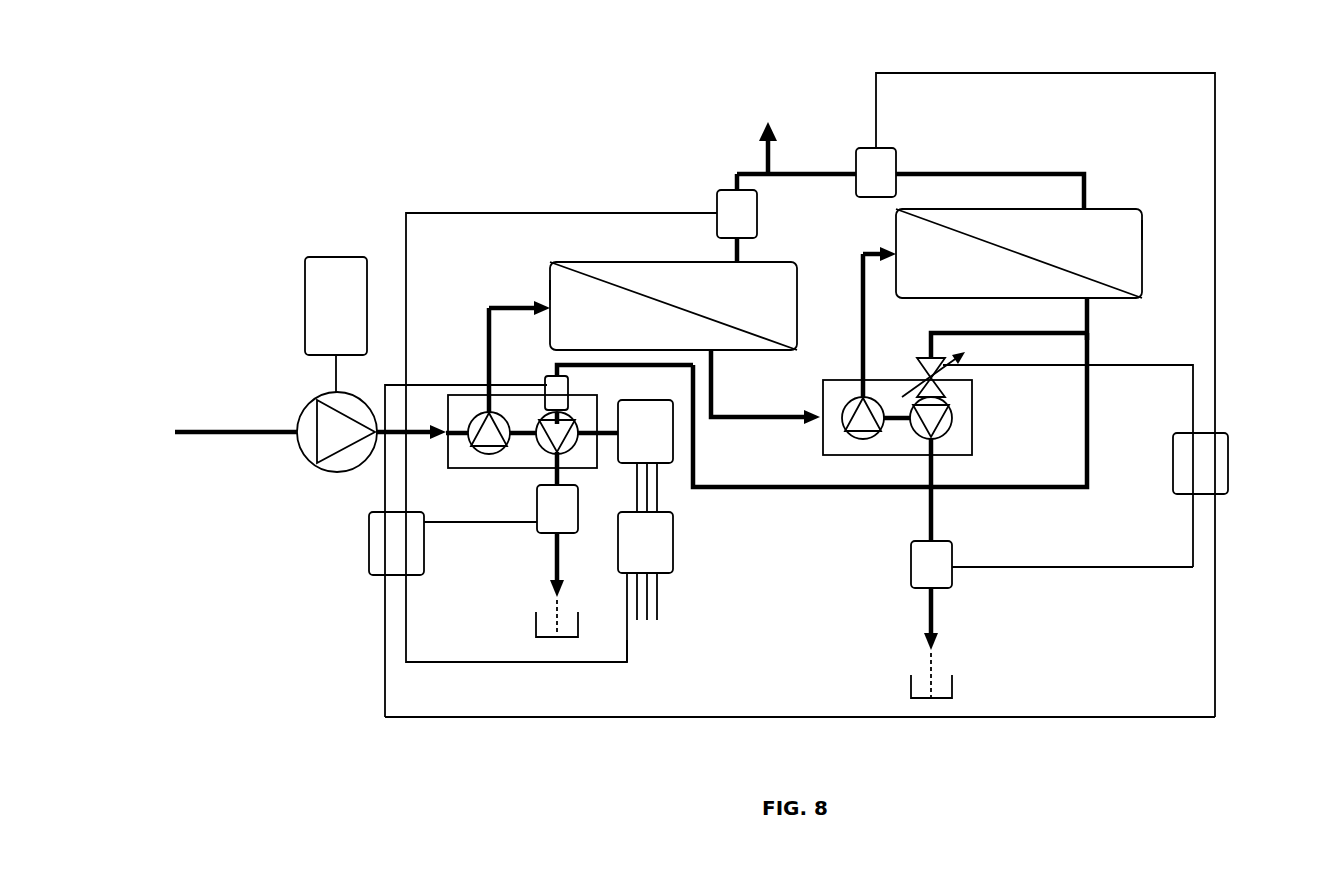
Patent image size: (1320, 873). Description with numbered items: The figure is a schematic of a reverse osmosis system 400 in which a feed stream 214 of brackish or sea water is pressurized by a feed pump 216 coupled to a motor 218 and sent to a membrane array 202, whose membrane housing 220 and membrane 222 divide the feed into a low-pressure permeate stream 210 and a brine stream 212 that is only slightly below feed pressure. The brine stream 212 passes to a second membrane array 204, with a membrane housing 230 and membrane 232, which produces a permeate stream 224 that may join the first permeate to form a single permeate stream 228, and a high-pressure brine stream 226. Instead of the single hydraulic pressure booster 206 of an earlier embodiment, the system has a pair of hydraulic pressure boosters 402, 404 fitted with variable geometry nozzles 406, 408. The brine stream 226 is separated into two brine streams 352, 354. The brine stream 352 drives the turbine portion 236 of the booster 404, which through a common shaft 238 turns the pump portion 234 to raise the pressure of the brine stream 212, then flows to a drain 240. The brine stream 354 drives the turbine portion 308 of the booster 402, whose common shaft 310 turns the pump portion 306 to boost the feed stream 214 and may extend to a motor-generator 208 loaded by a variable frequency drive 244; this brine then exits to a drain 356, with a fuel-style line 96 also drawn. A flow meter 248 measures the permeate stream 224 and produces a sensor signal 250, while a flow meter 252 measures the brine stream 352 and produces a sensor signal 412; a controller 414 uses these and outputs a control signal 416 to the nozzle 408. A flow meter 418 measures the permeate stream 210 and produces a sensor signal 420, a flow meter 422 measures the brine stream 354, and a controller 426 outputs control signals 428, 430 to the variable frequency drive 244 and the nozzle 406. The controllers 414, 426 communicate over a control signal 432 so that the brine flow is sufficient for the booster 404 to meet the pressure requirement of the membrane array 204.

The reverse osmosis system 400 is at (603, 88).
The fuel line 96 is at (612, 445).
The membrane array 202 is at (643, 260).
The membrane array 204 is at (1028, 222).
The hydraulic pressure booster 206 is at (895, 397).
The motor-generator 208 is at (652, 392).
The permeate stream 210 is at (740, 250).
The brine stream 212 is at (718, 424).
The feed stream 214 is at (392, 385).
The feed pump 216 is at (334, 472).
The motor 218 is at (336, 257).
The membrane housing 220 is at (550, 285).
The membrane 222 is at (665, 300).
The permeate stream 224 is at (1056, 174).
The brine stream 226 is at (1090, 330).
The single permeate stream 228 is at (770, 155).
The membrane housing 230 is at (1142, 228).
The membrane 232 is at (1068, 268).
The pump portion 234 is at (848, 408).
The turbine portion 236 is at (953, 420).
The common shaft 238 is at (895, 425).
The drain 240 is at (952, 680).
The variable frequency drive 244 is at (673, 535).
The flow meter 248 is at (862, 148).
The sensor signal 250 is at (982, 73).
The flow meter 252 is at (911, 566).
The pump portion 306 is at (470, 455).
The turbine portion 308 is at (545, 455).
The common shaft 310 is at (545, 392).
The brine stream 352 is at (1057, 333).
The brine stream 354 is at (1089, 455).
The drain 356 is at (536, 622).
The hydraulic pressure booster 402 is at (509, 407).
The hydraulic pressure booster 404 is at (880, 370).
The variable geometry nozzle 406 is at (548, 376).
The variable geometry nozzle 408 is at (945, 365).
The sensor signal 412 is at (1075, 567).
The controller 414 is at (1228, 457).
The control signal 416 is at (1193, 372).
The flow meter 418 is at (717, 195).
The sensor signal 420 is at (440, 213).
The flow meter 422 is at (566, 533).
The controller 426 is at (424, 553).
The control signal 428 is at (627, 648).
The control signal 430 is at (385, 608).
The control signal 432 is at (514, 717).